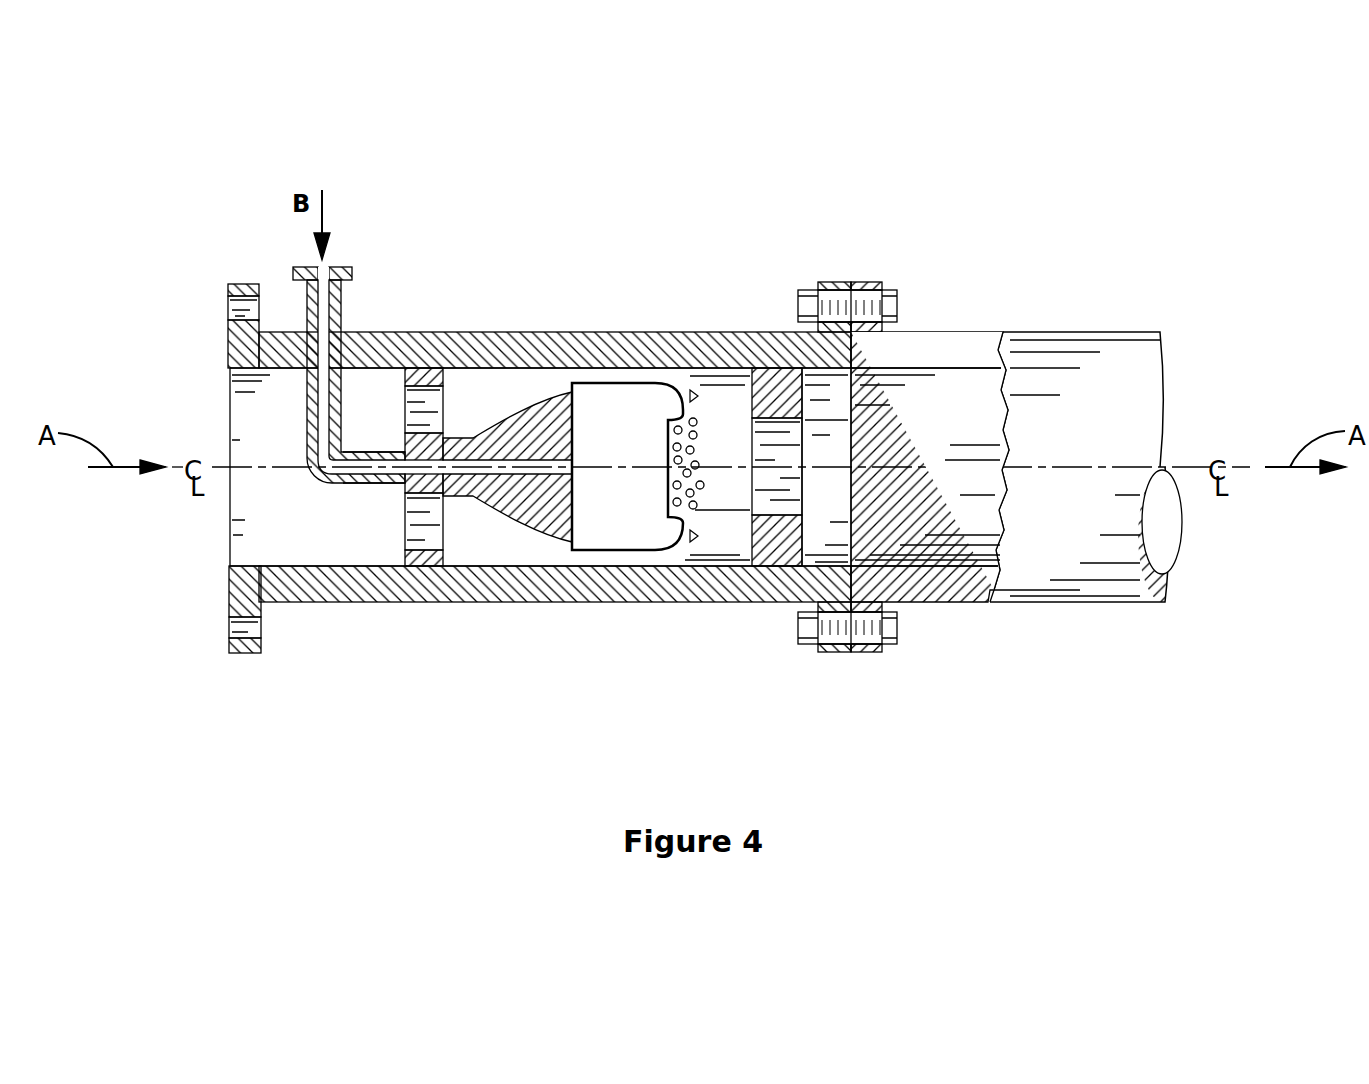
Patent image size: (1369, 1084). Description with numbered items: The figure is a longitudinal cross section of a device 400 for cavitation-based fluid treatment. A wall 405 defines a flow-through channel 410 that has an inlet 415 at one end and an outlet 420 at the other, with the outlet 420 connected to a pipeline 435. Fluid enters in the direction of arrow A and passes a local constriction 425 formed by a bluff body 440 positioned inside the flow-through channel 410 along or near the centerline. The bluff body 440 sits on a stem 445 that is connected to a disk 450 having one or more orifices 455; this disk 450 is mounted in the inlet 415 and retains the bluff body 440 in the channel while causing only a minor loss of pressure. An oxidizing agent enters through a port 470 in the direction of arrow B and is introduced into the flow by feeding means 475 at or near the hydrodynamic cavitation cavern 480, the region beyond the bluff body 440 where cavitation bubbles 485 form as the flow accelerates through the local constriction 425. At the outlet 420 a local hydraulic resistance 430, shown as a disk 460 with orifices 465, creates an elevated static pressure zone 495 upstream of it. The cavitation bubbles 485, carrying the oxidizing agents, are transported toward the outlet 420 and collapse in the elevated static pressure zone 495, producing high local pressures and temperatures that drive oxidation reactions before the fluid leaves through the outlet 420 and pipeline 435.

The device 400 is at (425, 646).
The wall 405 is at (630, 360).
The flow-through channel 410 is at (277, 403).
The inlet 415 is at (247, 418).
The outlet 420 is at (828, 487).
The local constriction 425 is at (572, 554).
The local hydraulic resistance 430 is at (758, 388).
The pipeline 435 is at (950, 398).
The bluff body 440 is at (548, 436).
The stem 445 is at (453, 478).
The disk 450 is at (405, 500).
The orifices 455 is at (440, 405).
The disk 460 is at (772, 538).
The orifices 465 is at (752, 450).
The port 470 is at (338, 267).
The feeding means 475 is at (357, 472).
The hydrodynamic cavitation cavern 480 is at (623, 483).
The cavitation bubbles 485 is at (717, 420).
The elevated static pressure zone 495 is at (790, 455).